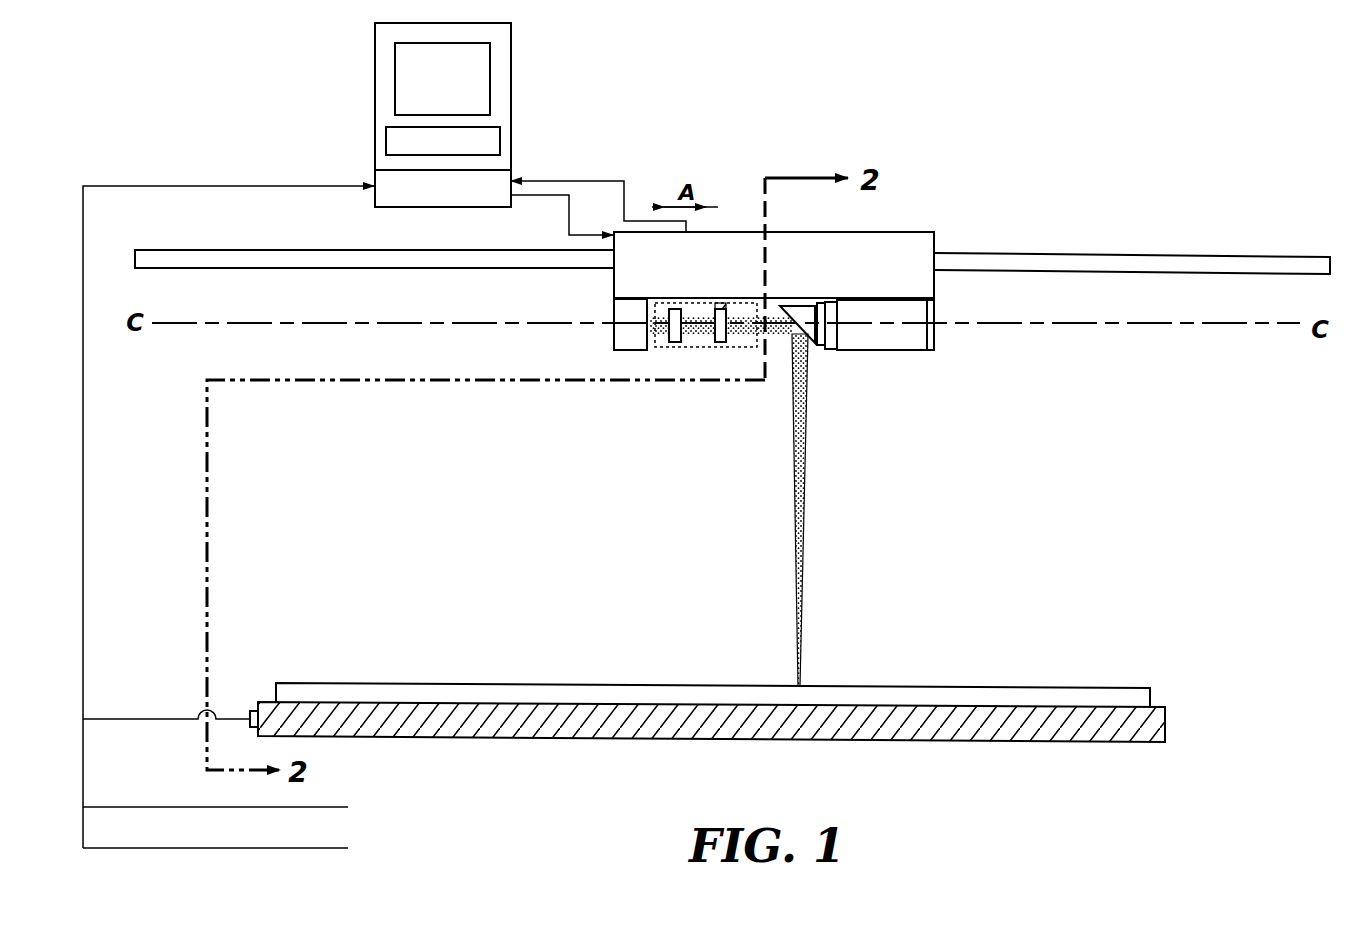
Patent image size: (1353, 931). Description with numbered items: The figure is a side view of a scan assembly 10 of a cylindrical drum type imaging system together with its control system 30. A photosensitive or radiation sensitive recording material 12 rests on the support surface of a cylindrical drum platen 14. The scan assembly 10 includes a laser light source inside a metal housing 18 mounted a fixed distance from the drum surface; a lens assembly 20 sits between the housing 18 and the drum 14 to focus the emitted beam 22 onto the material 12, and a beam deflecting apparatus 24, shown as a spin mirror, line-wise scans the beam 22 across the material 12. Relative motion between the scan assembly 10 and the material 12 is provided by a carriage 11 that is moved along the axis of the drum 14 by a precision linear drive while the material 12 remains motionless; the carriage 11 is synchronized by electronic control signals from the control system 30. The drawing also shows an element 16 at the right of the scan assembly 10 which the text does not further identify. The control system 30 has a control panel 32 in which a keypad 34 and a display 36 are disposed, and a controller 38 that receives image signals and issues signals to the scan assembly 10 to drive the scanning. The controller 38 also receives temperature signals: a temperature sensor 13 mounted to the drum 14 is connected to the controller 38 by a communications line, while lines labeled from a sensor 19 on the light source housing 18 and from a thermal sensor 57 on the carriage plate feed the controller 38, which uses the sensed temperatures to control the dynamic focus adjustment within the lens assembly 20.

The scan assembly 10 is at (785, 283).
The carriage 11 is at (923, 241).
The recording material 12 is at (1005, 690).
The temperature sensor 13 is at (250, 716).
The cylindrical drum platen 14 is at (1147, 720).
The drive motor 16 is at (872, 369).
The housing 18 is at (622, 337).
The temperature sensor 19 is at (288, 805).
The lens assembly 20 is at (717, 347).
The beam 22 is at (805, 488).
The beam deflecting apparatus 24 is at (821, 345).
The control system 30 is at (457, 106).
The control panel 32 is at (383, 62).
The keypad 34 is at (392, 143).
The display 36 is at (405, 98).
The controller 38 is at (382, 178).
The thermal sensor 57 is at (288, 848).